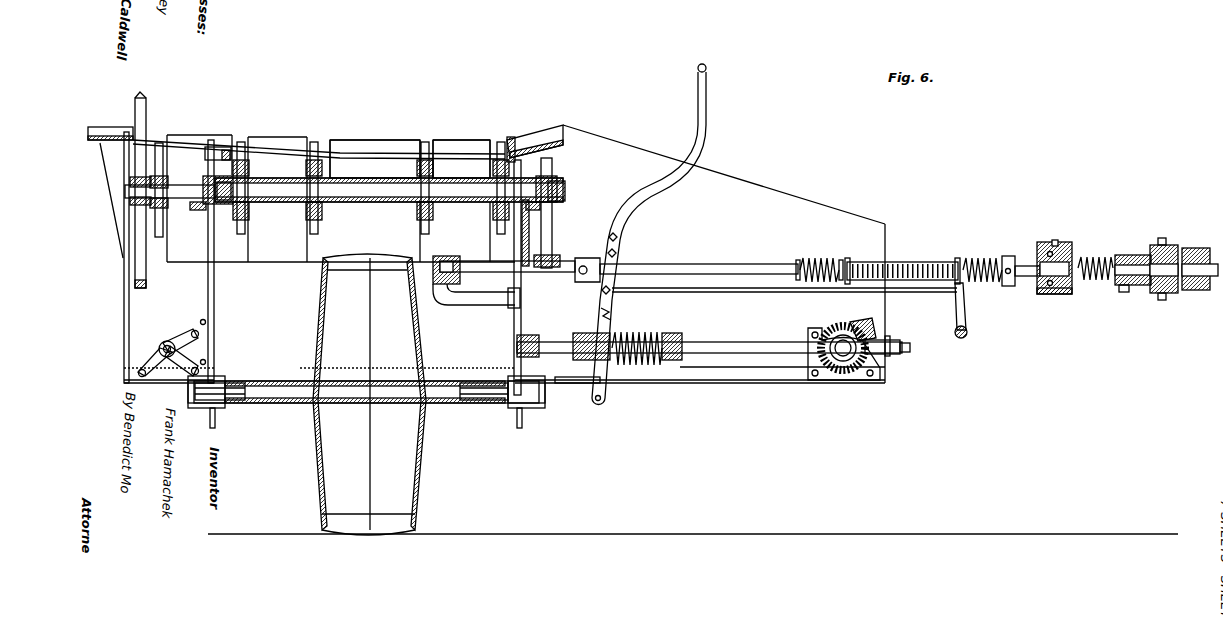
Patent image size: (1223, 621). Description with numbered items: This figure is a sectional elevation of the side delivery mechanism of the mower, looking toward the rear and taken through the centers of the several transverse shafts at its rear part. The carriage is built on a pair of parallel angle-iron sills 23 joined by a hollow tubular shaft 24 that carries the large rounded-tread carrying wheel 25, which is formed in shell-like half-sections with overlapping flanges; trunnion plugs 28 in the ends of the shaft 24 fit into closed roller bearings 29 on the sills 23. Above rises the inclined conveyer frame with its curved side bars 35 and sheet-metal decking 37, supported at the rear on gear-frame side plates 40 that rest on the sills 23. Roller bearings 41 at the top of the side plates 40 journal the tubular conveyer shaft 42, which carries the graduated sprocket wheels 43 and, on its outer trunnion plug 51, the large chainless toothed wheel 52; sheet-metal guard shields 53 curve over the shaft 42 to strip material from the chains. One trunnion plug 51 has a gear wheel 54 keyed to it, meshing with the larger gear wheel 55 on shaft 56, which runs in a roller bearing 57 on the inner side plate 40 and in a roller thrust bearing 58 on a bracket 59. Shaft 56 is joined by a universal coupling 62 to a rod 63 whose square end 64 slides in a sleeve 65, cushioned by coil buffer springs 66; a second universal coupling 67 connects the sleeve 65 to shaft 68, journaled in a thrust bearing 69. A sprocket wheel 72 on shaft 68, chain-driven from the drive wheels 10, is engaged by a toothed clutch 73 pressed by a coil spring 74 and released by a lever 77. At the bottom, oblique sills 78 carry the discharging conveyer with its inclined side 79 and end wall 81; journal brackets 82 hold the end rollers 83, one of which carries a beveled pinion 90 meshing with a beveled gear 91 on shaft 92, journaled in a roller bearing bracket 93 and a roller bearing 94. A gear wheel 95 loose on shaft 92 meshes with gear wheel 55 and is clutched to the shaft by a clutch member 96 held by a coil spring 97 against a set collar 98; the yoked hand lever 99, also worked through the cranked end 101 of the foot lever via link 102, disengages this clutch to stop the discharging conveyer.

The drive wheels 10 is at (1202, 288).
The sills 23 is at (215, 425).
The shaft 24 is at (282, 404).
The carrying wheel 25 is at (403, 500).
The trunnion plugs 28 is at (235, 383).
The roller bearings 29 is at (188, 398).
The side bars 35 is at (217, 150).
The decking 37 is at (110, 134).
The side plates 40 is at (213, 283).
The roller bearings 41 is at (195, 206).
The conveyer shaft 42 is at (370, 203).
The sprocket wheels 43 is at (242, 138).
The trunnion plugs 51 is at (175, 190).
The toothed wheel 52 is at (148, 113).
The guard shields 53 is at (408, 143).
The gear wheel 54 is at (553, 165).
The gear wheel 55 is at (552, 240).
The shaft 56 is at (478, 262).
The roller bearing 57 is at (528, 262).
The roller thrust bearing 58 is at (448, 257).
The bracket 59 is at (460, 300).
The universal coupling 62 is at (582, 283).
The rod 63 is at (753, 266).
The square end 64 is at (905, 263).
The sleeve 65 is at (940, 262).
The coil buffer springs 66 is at (813, 263).
The universal coupling 67 is at (1017, 254).
The shaft 68 is at (1065, 267).
The thrust bearing 69 is at (1050, 294).
The sprocket wheel 72 is at (1162, 253).
The toothed clutch 73 is at (1137, 254).
The coil spring 74 is at (1102, 282).
The lever 77 is at (1124, 290).
The sills 78 is at (160, 383).
The side 79 is at (778, 193).
The end wall 81 is at (118, 243).
The journal brackets 82 is at (817, 368).
The end rollers 83 is at (168, 340).
The beveled pinion 90 is at (848, 327).
The beveled gear 91 is at (874, 327).
The shaft 92 is at (750, 342).
The roller bearing bracket 93 is at (887, 358).
The roller bearing 94 is at (517, 355).
The gear wheel 95 is at (548, 383).
The clutch member 96 is at (610, 330).
The coil spring 97 is at (652, 332).
The set collar 98 is at (675, 361).
The hand lever 99 is at (622, 202).
The cranked end 101 is at (965, 312).
The link 102 is at (715, 293).